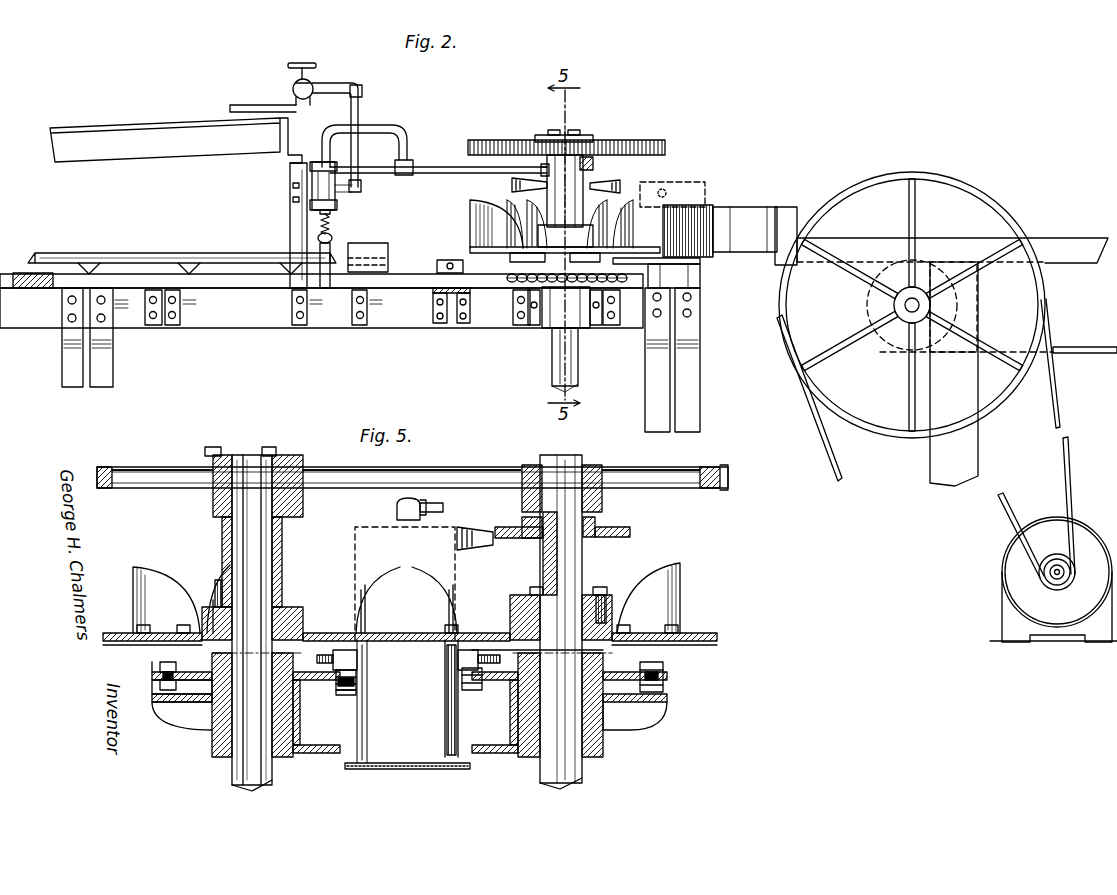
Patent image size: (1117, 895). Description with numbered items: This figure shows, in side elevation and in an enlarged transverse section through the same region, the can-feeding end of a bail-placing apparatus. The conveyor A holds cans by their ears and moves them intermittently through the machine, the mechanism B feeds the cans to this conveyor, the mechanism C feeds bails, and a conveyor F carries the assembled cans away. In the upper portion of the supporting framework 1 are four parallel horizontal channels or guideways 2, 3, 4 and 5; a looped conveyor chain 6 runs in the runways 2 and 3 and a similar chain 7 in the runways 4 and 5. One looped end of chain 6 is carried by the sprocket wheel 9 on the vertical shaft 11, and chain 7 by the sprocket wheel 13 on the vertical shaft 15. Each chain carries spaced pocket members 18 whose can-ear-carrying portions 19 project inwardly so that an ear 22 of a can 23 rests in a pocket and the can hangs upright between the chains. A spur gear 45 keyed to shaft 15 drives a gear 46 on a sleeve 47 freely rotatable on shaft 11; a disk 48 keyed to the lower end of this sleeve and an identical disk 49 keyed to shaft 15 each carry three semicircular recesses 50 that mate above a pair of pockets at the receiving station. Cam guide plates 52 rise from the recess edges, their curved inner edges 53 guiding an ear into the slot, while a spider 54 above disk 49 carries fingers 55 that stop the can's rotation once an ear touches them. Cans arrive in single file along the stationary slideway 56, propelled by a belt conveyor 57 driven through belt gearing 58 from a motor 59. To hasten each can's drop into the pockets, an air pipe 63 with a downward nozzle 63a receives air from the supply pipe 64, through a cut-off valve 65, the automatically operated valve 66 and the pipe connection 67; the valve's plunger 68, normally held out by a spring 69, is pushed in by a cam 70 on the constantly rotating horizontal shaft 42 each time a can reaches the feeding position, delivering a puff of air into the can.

In FIG. 2, the supporting framework 1 is at (196, 305).
In FIG. 5, the supporting framework 1 is at (172, 706).
In FIG. 5, the channel or guideway 2 is at (345, 696).
In FIG. 2, the channel or guideway 3 is at (243, 291).
In FIG. 5, the channel or guideway 3 is at (155, 690).
In FIG. 5, the channel or guideway 4 is at (470, 692).
In FIG. 5, the channel or guideway 5 is at (650, 703).
In FIG. 2, the conveyor chain 6 is at (416, 291).
In FIG. 5, the conveyor chain 6 is at (158, 686).
In FIG. 5, the conveyor chain 7 is at (665, 687).
In FIG. 2, the sprocket wheel 9 is at (585, 312).
In FIG. 5, the sprocket wheel 9 is at (207, 683).
In FIG. 2, the vertical shaft 11 is at (580, 372).
In FIG. 5, the vertical shaft 11 is at (234, 538).
In FIG. 5, the sprocket wheel 13 is at (618, 656).
In FIG. 5, the vertical shaft 15 is at (597, 567).
In FIG. 2, the pocket member 18 is at (199, 263).
In FIG. 5, the pocket member 18 is at (358, 655).
In FIG. 5, the can-ear-carrying portion 19 is at (355, 686).
In FIG. 2, the ear 22 is at (665, 186).
In FIG. 5, the ear 22 is at (352, 668).
In FIG. 2, the can 23 is at (700, 223).
In FIG. 5, the can 23 is at (372, 768).
In FIG. 2, the horizontal shaft 42 is at (162, 240).
In FIG. 5, the spur gear 45 is at (712, 480).
In FIG. 2, the gear 46 is at (667, 146).
In FIG. 5, the gear 46 is at (104, 488).
In FIG. 2, the sleeve 47 is at (594, 160).
In FIG. 5, the sleeve 47 is at (224, 546).
In FIG. 5, the disk 48 is at (205, 607).
In FIG. 2, the disk 49 is at (470, 250).
In FIG. 5, the disk 49 is at (510, 607).
In FIG. 5, the recess 50 is at (453, 633).
In FIG. 2, the cam guide plate 52 is at (510, 232).
In FIG. 5, the cam guide plate 52 is at (140, 590).
In FIG. 5, the inner edge 53 is at (170, 578).
In FIG. 2, the spider 54 is at (598, 166).
In FIG. 5, the spider 54 is at (596, 520).
In FIG. 2, the finger 55 is at (512, 185).
In FIG. 5, the finger 55 is at (460, 546).
In FIG. 2, the slideway 56 is at (868, 234).
In FIG. 2, the belt conveyor 57 is at (1104, 265).
In FIG. 2, the belt gearing 58 is at (1062, 430).
In FIG. 2, the motor 59 is at (1078, 540).
In FIG. 2, the air pipe 63 is at (452, 178).
In FIG. 5, the air pipe 63 is at (423, 507).
In FIG. 2, the nozzle 63a is at (576, 190).
In FIG. 5, the nozzle 63a is at (400, 522).
In FIG. 2, the air supply pipe 64 is at (260, 97).
In FIG. 2, the cut-off valve 65 is at (293, 86).
In FIG. 2, the automatically operated valve 66 is at (312, 190).
In FIG. 2, the pipe connection 67 is at (417, 119).
In FIG. 2, the operating plunger 68 is at (333, 228).
In FIG. 2, the spring 69 is at (333, 214).
In FIG. 2, the cam 70 is at (318, 246).
In FIG. 2, the conveyor A is at (19, 267).
In FIG. 5, the conveyor A is at (362, 700).
In FIG. 2, the can-feeding mechanism B is at (648, 131).
In FIG. 5, the can-feeding mechanism B is at (470, 512).
In FIG. 2, the bail-feeding mechanism C is at (103, 121).
In FIG. 5, the conveyor F is at (407, 786).